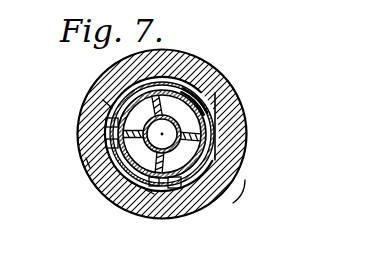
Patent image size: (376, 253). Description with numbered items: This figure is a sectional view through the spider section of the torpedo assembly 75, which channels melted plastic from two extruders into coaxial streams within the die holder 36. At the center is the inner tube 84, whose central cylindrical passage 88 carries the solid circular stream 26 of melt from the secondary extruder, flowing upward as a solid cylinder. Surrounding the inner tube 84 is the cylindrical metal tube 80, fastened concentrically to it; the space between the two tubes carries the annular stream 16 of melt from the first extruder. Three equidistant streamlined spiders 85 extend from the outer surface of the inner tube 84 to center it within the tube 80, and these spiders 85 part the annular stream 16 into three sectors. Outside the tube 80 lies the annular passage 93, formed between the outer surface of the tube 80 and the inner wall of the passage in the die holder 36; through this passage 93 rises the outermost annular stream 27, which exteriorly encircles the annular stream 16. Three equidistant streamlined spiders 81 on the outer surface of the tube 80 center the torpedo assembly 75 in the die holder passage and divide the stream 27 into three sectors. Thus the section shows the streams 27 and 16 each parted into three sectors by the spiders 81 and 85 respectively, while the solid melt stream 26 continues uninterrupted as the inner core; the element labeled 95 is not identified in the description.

The annular stream 16 is at (205, 138).
The solid circular stream 26 is at (215, 108).
The annular stream 27 is at (203, 154).
The die holder 36 is at (205, 70).
The torpedo assembly 75 is at (156, 182).
The cylindrical metal tube 80 is at (88, 163).
The spiders 81 is at (110, 120).
The inner tube 84 is at (180, 75).
The spiders 85 is at (108, 105).
The central cylindrical passage 88 is at (112, 143).
The annular passage 93 is at (175, 184).
The spoke 95 is at (195, 122).